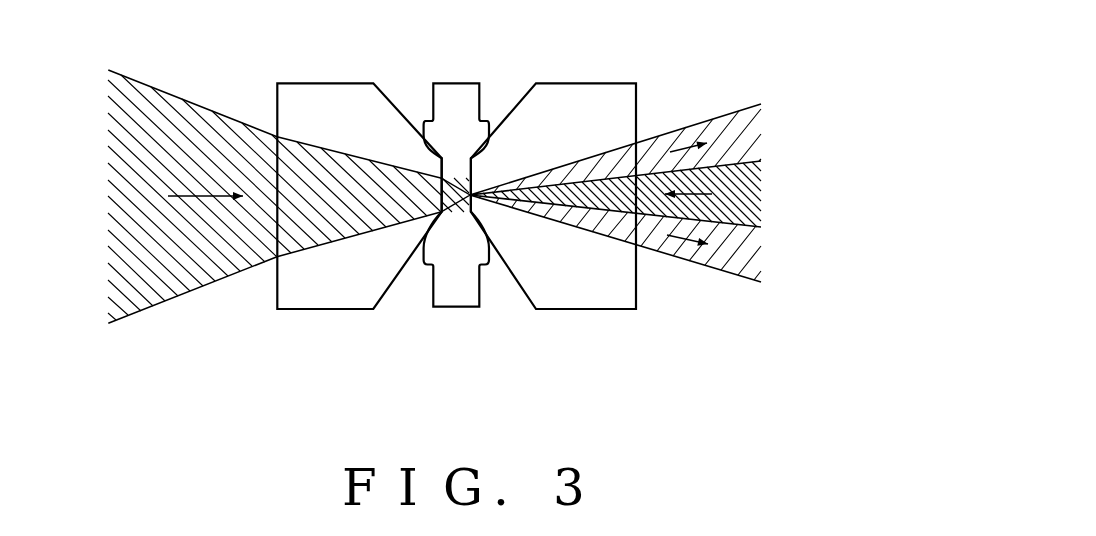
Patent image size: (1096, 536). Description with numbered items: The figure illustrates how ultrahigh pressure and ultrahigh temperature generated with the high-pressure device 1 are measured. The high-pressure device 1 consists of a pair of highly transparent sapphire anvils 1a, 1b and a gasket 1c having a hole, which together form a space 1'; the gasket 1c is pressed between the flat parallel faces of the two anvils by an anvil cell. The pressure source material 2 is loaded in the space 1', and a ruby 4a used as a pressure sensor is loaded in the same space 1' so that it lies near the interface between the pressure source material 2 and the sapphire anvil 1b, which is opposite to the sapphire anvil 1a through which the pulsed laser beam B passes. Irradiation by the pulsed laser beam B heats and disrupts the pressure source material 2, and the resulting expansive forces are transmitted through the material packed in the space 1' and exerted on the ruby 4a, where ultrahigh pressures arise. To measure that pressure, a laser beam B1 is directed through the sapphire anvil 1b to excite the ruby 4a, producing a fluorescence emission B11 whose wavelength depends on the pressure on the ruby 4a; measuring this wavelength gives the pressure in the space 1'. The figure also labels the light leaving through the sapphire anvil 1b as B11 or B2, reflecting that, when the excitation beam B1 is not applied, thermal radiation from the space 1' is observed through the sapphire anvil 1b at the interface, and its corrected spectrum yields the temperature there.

The high-pressure device 1 is at (458, 212).
The sapphire anvil 1a is at (322, 278).
The sapphire anvil 1b is at (590, 282).
The gasket 1c is at (458, 93).
The space 1' is at (412, 285).
The pressure source material 2 is at (468, 215).
The ruby 4a is at (450, 176).
The pulsed laser beam B is at (103, 195).
The laser beam B1 is at (767, 195).
The fluorescence emission B11 is at (795, 113).
The diverging light beam B2 is at (895, 95).